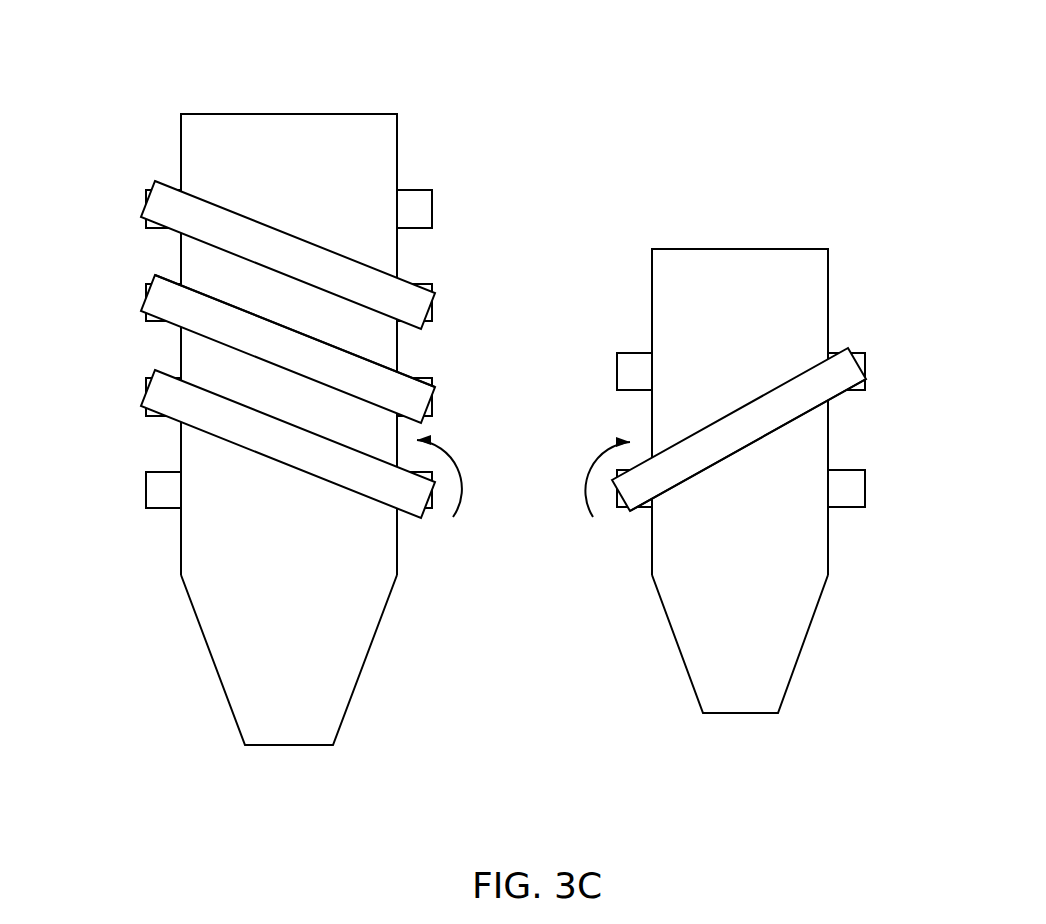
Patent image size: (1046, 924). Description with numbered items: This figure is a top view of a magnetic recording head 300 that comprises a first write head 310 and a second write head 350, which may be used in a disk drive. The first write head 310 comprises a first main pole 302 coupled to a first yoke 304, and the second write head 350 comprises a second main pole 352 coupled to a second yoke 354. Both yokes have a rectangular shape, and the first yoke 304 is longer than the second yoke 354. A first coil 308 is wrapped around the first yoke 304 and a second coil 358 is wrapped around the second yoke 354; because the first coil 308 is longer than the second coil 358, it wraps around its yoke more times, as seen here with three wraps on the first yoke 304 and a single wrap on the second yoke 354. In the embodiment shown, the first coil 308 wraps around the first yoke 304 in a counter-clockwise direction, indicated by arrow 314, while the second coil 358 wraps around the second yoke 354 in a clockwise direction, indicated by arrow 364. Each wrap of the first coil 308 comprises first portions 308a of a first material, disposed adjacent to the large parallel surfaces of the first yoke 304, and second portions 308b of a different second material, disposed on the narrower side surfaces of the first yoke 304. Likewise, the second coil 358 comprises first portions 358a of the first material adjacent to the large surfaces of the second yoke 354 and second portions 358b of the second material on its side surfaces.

The magnetic recording head 300 is at (782, 55).
The first write head 310 is at (145, 132).
The first yoke 304 is at (308, 160).
The first main pole 302 is at (287, 747).
The first coil 308 is at (273, 442).
The first portions of the first coil 308a is at (302, 357).
The second portions of the first coil 308b is at (422, 210).
The arrow 314 is at (465, 470).
The second write head 350 is at (848, 235).
The second yoke 354 is at (758, 296).
The second main pole 352 is at (738, 716).
The second coil 358 is at (828, 392).
The first portions of the second coil 358a is at (702, 455).
The second portions of the second coil 358b is at (625, 367).
The arrow 364 is at (590, 477).